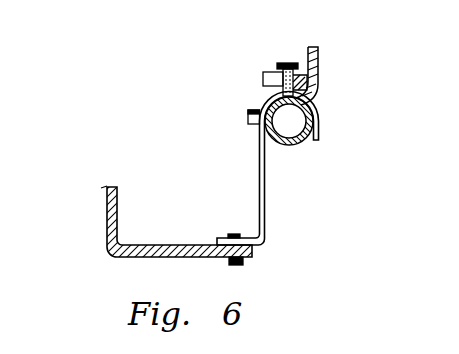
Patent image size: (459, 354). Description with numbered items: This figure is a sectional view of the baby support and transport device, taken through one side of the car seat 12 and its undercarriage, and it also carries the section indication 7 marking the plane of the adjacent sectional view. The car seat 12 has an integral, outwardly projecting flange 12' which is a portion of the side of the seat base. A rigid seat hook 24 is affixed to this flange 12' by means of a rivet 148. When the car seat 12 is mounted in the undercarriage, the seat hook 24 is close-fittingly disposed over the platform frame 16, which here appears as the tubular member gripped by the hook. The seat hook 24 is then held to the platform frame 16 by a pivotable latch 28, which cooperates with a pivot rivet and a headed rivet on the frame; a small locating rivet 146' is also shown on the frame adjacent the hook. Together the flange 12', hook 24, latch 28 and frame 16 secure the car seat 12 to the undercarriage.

The section line 7- 7 is at (208, 25).
The car seat 12 is at (150, 235).
The outwardly projecting flange 12' is at (181, 222).
The platform frame 16 is at (290, 150).
The seat hook 24 is at (265, 212).
The latch 28 is at (315, 88).
The locating tab 146' is at (200, 128).
The rivet 148 is at (243, 265).